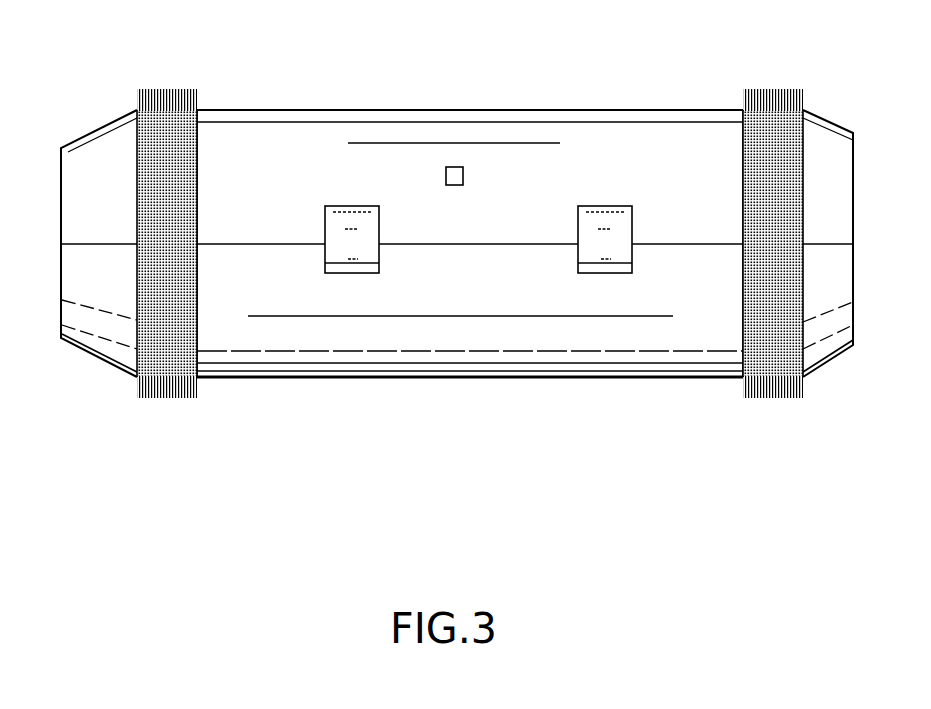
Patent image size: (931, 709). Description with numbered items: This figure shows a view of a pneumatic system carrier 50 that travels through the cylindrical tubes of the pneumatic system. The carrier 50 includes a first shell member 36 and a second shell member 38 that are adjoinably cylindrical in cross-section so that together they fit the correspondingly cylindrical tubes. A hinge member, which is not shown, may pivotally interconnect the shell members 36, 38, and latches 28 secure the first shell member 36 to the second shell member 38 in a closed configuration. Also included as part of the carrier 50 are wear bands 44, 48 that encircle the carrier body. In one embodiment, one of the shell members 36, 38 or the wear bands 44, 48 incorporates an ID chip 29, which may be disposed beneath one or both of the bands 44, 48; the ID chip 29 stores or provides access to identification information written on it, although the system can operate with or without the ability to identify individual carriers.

The carrier 50 is at (110, 117).
The second shell member 38 is at (604, 138).
The first shell member 36 is at (630, 380).
The wear band 44 is at (200, 388).
The wear band 48 is at (755, 398).
The latch 28 is at (379, 251).
The ID chip 29 is at (455, 167).